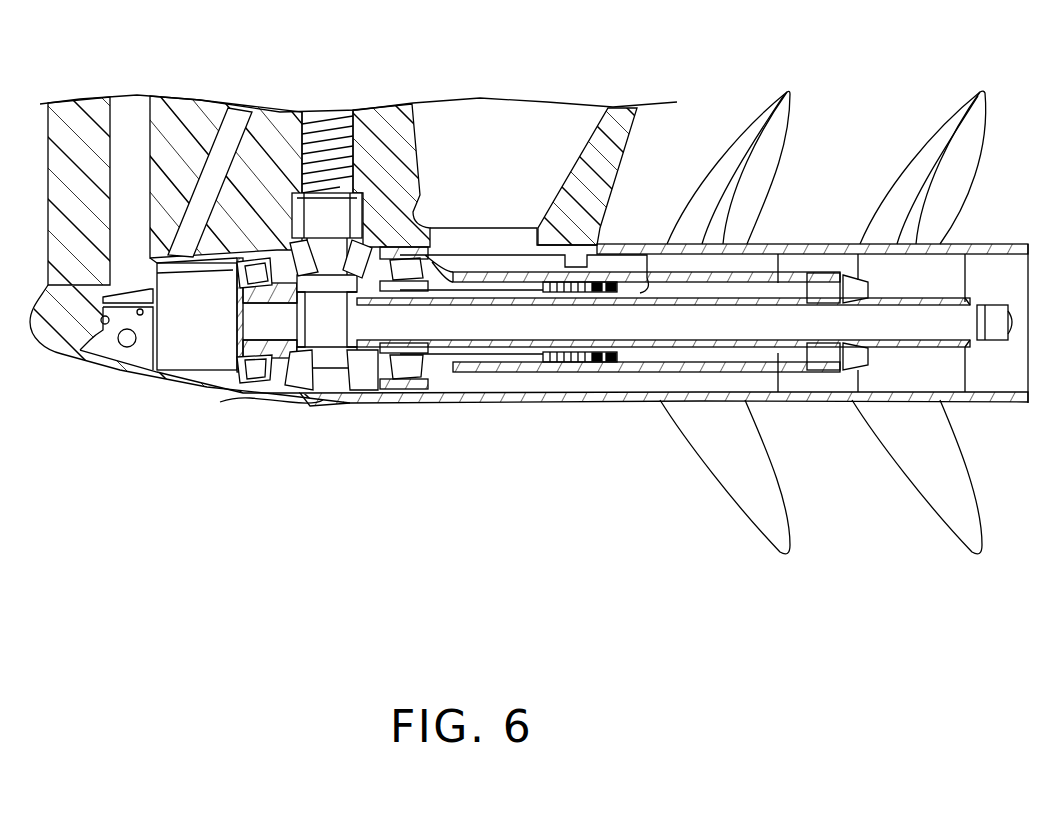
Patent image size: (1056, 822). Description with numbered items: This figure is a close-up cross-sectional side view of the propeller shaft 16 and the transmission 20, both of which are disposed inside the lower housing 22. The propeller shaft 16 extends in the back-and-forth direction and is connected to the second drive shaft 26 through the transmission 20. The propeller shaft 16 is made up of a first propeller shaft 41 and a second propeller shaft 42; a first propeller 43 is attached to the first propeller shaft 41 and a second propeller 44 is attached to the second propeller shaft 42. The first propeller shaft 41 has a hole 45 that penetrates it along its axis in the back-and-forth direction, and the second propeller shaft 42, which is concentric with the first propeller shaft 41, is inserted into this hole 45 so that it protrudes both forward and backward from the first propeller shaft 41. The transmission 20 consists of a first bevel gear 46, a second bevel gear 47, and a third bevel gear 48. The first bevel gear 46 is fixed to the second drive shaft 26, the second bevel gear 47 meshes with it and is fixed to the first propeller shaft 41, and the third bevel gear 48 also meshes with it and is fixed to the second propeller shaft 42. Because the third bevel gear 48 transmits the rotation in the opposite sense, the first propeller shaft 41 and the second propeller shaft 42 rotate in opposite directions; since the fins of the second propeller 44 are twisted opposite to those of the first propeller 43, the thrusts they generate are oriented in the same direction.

The propeller shaft 16 is at (684, 401).
The transmission 20 is at (323, 358).
The lower housing 22 is at (625, 152).
The second drive shaft 26 is at (326, 112).
The first propeller shaft 41 is at (476, 362).
The second propeller shaft 42 is at (530, 332).
The first propeller 43 is at (707, 397).
The second propeller 44 is at (881, 400).
The hole 45 is at (607, 362).
The first bevel gear 46 is at (401, 365).
The second bevel gear 47 is at (368, 378).
The third bevel gear 48 is at (300, 380).